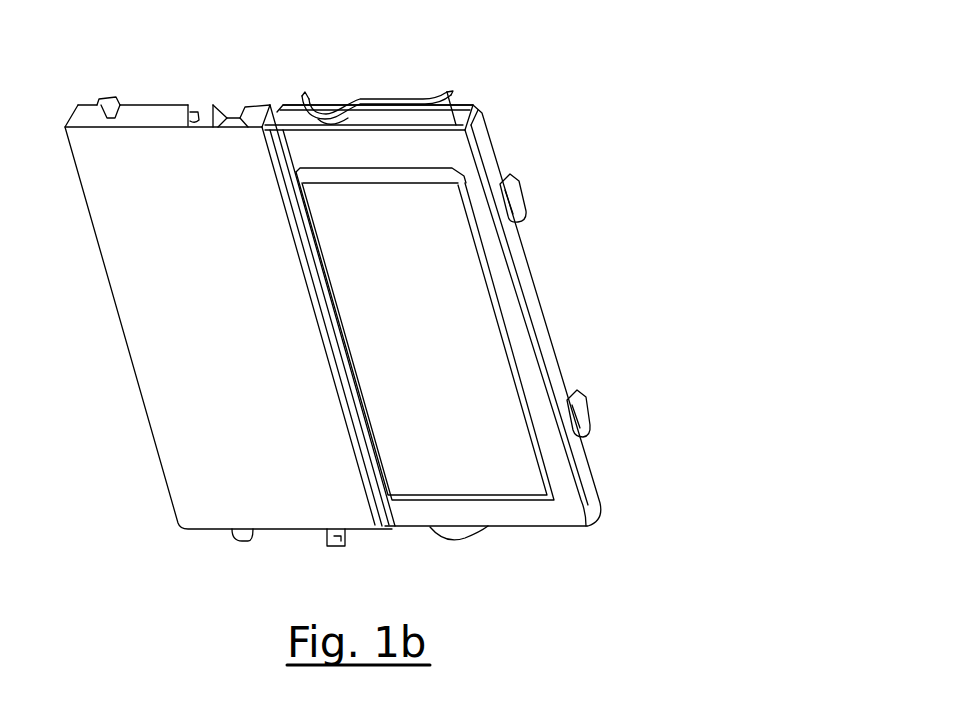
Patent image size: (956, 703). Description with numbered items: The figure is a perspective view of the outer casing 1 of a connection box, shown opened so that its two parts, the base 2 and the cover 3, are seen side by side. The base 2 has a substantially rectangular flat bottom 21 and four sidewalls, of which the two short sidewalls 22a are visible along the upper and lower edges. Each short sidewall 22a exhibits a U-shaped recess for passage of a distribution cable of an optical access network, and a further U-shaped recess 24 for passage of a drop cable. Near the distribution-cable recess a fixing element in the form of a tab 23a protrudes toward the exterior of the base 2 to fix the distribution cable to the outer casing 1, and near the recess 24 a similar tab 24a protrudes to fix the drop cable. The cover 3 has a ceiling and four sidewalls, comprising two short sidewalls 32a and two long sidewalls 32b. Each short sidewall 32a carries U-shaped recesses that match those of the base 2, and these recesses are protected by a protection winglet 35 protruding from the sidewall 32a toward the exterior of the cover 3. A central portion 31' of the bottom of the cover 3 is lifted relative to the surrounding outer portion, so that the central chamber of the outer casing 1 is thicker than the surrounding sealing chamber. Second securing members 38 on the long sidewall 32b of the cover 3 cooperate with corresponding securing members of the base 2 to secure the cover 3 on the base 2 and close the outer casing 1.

The outer casing 1 is at (659, 183).
The base 2 is at (108, 347).
The bottom 21 is at (213, 395).
The short sidewall 22a is at (170, 103).
The fixing element 23a is at (197, 107).
The U-shaped recess 24 is at (235, 112).
The fixing element 24a is at (102, 98).
The cover 3 is at (560, 291).
The central portion 31' is at (457, 372).
The short sidewall 32a is at (462, 105).
The long sidewall 32b is at (493, 152).
The protection winglet 35 is at (385, 103).
The second securing member 38 is at (517, 192).